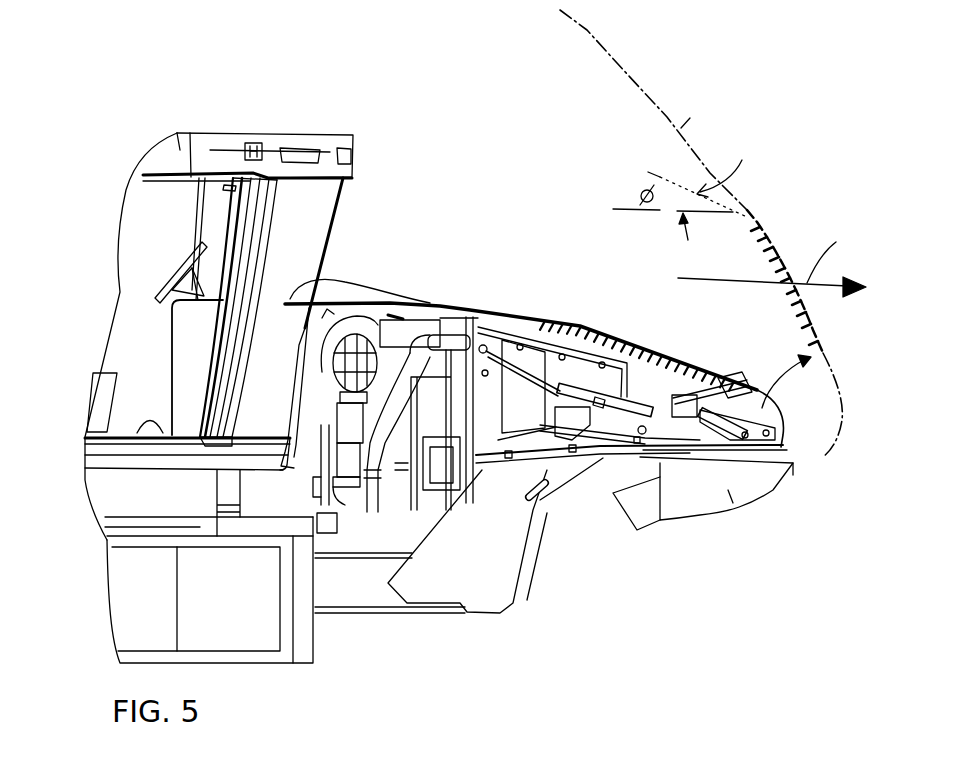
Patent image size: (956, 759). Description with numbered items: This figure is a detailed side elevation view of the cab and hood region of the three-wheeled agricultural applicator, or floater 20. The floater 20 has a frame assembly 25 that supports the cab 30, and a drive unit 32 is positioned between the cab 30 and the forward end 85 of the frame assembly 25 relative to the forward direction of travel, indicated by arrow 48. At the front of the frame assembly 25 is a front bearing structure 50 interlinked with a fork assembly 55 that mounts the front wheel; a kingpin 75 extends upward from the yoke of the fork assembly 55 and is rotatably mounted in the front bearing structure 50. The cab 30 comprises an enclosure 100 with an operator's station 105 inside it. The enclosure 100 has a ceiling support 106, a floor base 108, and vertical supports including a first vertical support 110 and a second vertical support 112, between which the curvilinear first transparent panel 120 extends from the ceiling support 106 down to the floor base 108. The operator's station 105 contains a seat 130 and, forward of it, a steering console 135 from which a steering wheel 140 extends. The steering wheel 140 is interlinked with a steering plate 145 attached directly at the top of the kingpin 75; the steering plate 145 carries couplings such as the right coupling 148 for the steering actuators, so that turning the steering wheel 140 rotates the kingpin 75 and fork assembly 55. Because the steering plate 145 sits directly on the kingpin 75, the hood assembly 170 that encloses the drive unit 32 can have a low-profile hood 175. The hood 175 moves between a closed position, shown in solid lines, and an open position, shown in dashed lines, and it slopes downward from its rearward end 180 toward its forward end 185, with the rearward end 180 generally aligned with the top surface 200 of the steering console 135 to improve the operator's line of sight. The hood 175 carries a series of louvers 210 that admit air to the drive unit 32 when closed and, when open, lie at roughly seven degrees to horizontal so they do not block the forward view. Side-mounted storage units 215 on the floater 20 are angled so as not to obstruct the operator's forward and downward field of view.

The floater 20 is at (142, 82).
The frame assembly 25 is at (383, 628).
The cab 30 is at (380, 203).
The drive unit 32 is at (390, 520).
The forward direction of travel 48 is at (826, 563).
The front bearing structure 50 is at (600, 440).
The fork assembly 55 is at (698, 508).
The kingpin 75 is at (740, 516).
The forward end 85 is at (627, 470).
The enclosure 100 is at (295, 123).
The operator's station 105 is at (128, 326).
The ceiling support 106 is at (217, 152).
The floor base 108 is at (122, 452).
The first vertical support 110 is at (238, 408).
The second vertical support 112 is at (160, 437).
The first transparent panel 120 is at (324, 255).
The seat 130 is at (97, 408).
The steering console 135 is at (170, 366).
The steering wheel 140 is at (173, 277).
The steering plate 145 is at (670, 390).
The right coupling 148 is at (641, 397).
The hood assembly 170 is at (522, 280).
The hood 175 is at (688, 118).
The rearward end 180 is at (437, 303).
The forward end 185 is at (757, 370).
The top surface 200 is at (353, 292).
The louvers 210 is at (770, 210).
The side-mounted storage units 215 is at (173, 506).